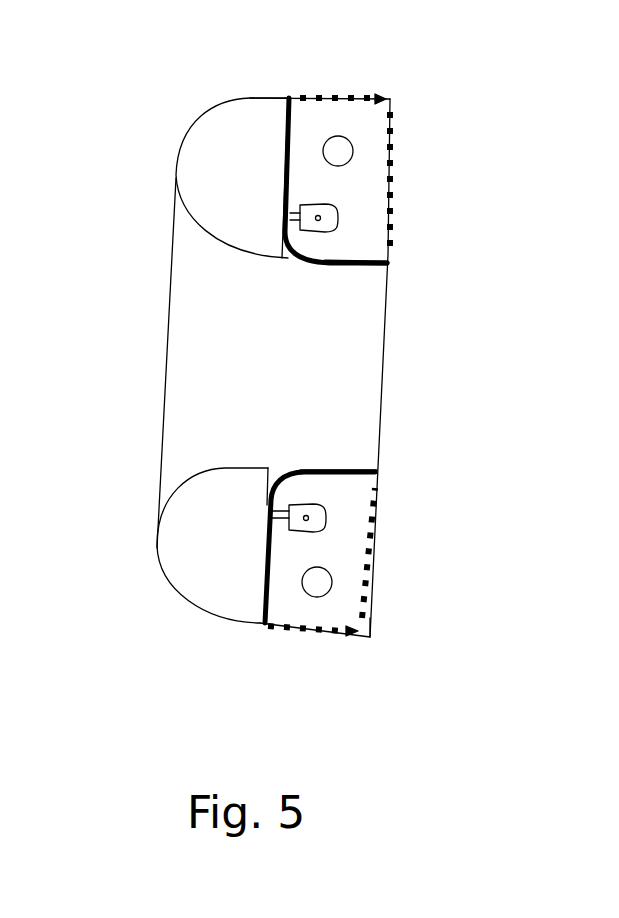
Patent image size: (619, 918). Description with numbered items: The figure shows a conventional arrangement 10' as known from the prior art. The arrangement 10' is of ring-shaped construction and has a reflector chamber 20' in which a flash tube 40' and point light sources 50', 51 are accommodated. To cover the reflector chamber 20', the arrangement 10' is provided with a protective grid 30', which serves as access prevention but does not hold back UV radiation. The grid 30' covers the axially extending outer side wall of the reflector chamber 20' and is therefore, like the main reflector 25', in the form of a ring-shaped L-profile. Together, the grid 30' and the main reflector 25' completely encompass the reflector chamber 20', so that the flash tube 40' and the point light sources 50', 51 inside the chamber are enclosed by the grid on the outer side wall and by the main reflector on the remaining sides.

The conventional arrangement 10' is at (346, 318).
The reflector chamber 20' is at (383, 360).
The main reflector 25' is at (415, 303).
The protective grid 30' is at (413, 365).
The flash tube 40' is at (420, 129).
The point light source 50' is at (406, 214).
The point light source 51 is at (304, 522).